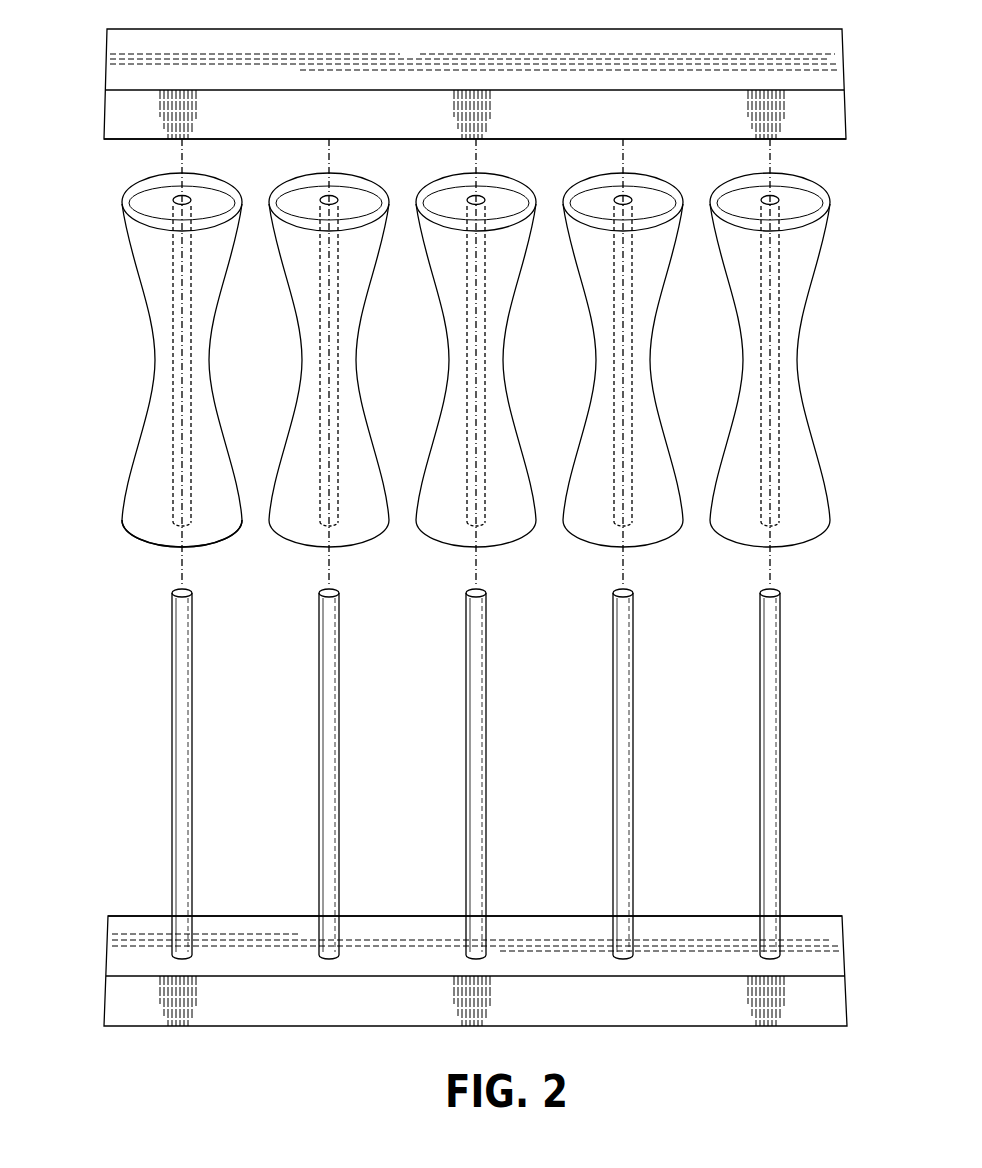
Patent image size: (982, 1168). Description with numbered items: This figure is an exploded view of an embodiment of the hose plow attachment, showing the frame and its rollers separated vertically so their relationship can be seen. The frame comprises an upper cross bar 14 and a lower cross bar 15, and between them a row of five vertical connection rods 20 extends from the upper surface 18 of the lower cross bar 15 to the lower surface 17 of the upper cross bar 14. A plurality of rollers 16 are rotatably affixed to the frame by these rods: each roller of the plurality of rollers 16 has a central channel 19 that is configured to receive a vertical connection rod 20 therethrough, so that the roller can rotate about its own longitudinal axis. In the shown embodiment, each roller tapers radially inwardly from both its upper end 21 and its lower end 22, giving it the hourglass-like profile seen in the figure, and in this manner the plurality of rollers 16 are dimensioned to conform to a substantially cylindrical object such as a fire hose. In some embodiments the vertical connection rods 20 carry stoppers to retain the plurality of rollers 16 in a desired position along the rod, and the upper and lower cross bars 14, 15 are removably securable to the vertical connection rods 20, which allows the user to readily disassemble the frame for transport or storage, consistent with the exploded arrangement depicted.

The upper cross bar 14 is at (459, 122).
The lower cross bar 15 is at (458, 939).
The plurality of rollers 16 is at (470, 362).
The lower surface 17 is at (834, 139).
The upper surface 18 is at (810, 933).
The central channel 19 is at (170, 363).
The vertical connection rod 20 is at (169, 762).
The upper end 21 is at (128, 207).
The lower end 22 is at (122, 522).